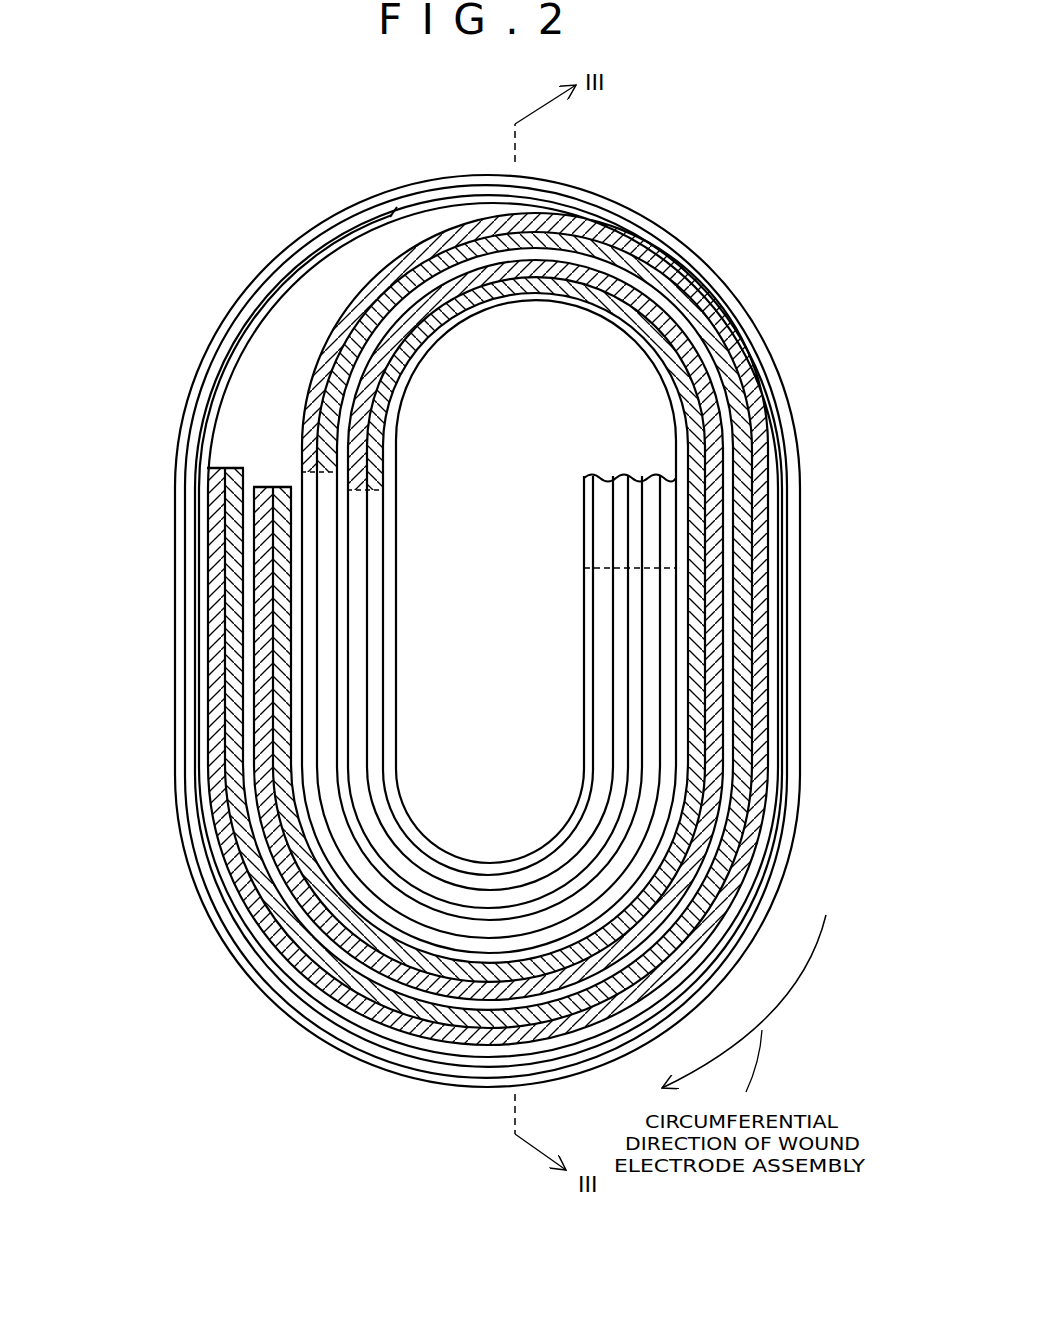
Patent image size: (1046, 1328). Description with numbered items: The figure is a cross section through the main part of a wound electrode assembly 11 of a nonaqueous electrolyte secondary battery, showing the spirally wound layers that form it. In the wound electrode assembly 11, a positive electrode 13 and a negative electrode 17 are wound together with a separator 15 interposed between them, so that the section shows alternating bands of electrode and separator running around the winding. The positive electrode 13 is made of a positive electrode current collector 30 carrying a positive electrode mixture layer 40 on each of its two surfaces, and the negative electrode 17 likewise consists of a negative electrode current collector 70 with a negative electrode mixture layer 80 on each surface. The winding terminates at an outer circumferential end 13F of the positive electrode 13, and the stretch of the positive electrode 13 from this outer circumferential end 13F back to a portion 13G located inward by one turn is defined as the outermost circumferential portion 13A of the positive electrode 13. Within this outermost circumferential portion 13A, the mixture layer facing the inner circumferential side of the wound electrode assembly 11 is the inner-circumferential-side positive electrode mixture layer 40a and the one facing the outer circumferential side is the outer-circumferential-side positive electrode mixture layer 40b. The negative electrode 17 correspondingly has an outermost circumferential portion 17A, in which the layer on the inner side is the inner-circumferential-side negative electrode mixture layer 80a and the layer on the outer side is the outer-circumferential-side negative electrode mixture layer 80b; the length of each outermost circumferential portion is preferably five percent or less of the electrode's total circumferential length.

The wound electrode assembly 11 is at (742, 120).
The positive electrode 13 is at (458, 556).
The outermost circumferential portion of the positive electrode 13A is at (166, 990).
The outer circumferential end of the positive electrode 13F is at (283, 486).
The portion located inward by one turn from the outer circumferential end 13G is at (378, 492).
The separator 15 is at (284, 283).
The negative electrode 17 is at (518, 664).
The outermost circumferential portion of the negative electrode 17A is at (110, 548).
The positive electrode current collector 30 is at (372, 567).
The positive electrode mixture layer 40 is at (376, 595).
The inner-circumferential-side positive electrode mixture layer 40a is at (378, 942).
The outer-circumferential-side positive electrode mixture layer 40b is at (380, 970).
The negative electrode current collector 70 is at (653, 672).
The negative electrode mixture layer 80 is at (647, 703).
The inner-circumferential-side negative electrode mixture layer 80a is at (222, 588).
The outer-circumferential-side negative electrode mixture layer 80b is at (214, 617).